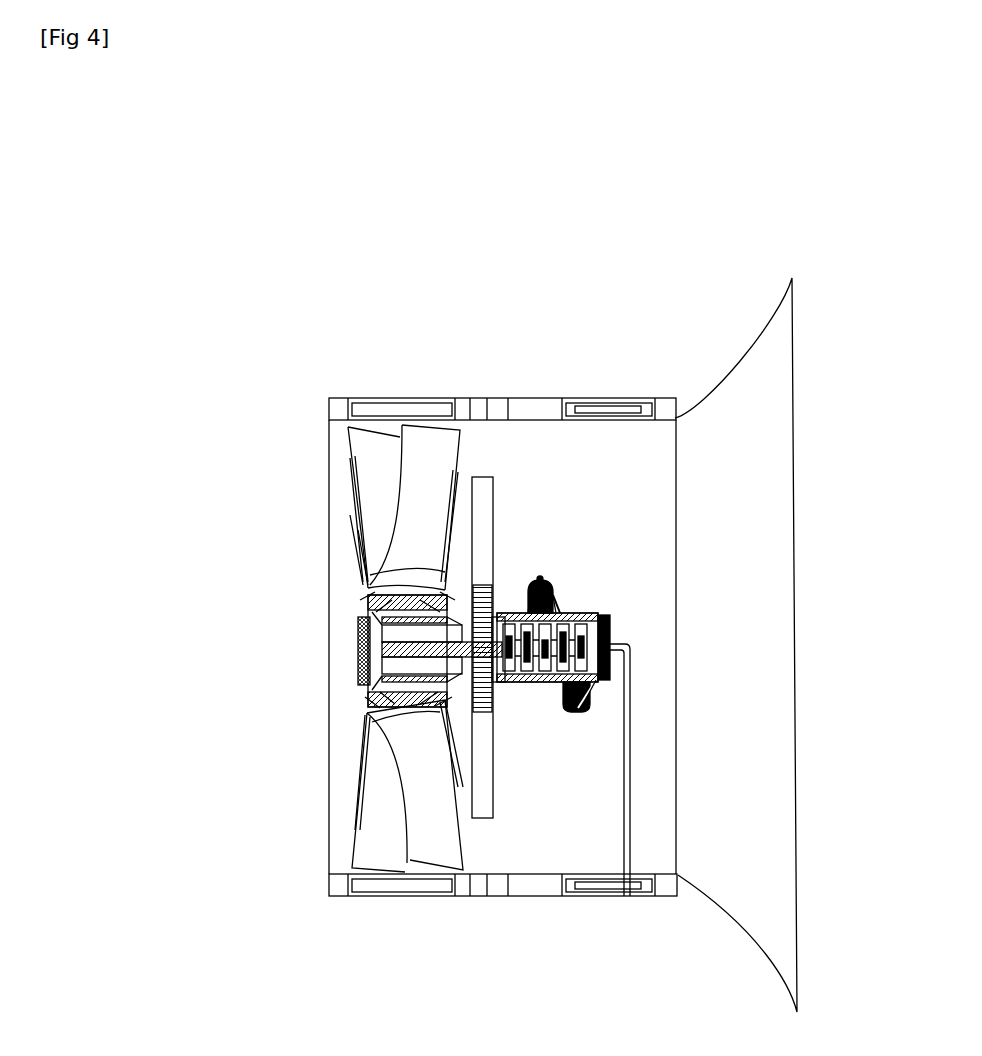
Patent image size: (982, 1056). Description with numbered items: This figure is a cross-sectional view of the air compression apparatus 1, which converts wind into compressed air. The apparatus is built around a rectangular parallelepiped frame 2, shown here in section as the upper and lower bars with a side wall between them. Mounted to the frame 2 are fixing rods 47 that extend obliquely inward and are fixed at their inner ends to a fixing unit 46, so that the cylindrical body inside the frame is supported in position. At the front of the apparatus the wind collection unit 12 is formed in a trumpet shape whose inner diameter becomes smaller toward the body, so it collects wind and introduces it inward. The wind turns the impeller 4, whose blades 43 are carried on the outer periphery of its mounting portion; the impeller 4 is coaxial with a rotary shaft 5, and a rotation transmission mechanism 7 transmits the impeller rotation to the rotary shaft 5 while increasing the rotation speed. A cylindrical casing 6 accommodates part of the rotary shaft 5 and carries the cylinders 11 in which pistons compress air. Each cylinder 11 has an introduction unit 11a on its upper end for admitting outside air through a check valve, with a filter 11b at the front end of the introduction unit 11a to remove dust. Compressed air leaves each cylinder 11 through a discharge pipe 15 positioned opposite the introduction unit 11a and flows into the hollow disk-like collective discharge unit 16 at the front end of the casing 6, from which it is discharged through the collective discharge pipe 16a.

The air compression apparatus 1 is at (457, 346).
The frame 2 is at (505, 390).
The impeller 4 is at (344, 504).
The rotary shaft 5 is at (377, 660).
The cylindrical casing 6 is at (573, 616).
The rotation transmission mechanism 7 is at (348, 636).
The cylinder 11 is at (528, 606).
The introduction unit 11a is at (551, 580).
The filter 11b is at (540, 577).
The wind collection unit 12 is at (798, 479).
The discharge pipe 15 is at (592, 684).
The collective discharge unit 16 is at (610, 636).
The collective discharge pipe 16a is at (631, 755).
The blade 43 is at (355, 832).
The fixing unit 46 is at (494, 690).
The fixing rod 47 is at (496, 506).